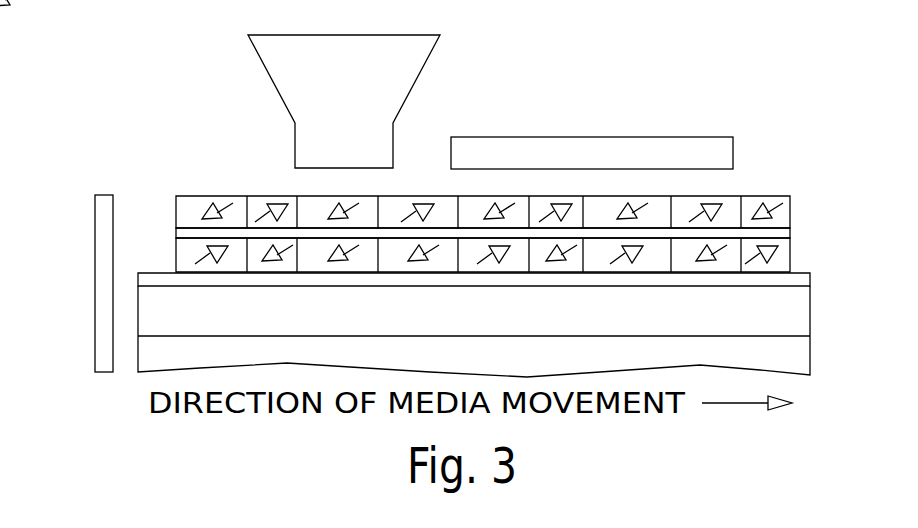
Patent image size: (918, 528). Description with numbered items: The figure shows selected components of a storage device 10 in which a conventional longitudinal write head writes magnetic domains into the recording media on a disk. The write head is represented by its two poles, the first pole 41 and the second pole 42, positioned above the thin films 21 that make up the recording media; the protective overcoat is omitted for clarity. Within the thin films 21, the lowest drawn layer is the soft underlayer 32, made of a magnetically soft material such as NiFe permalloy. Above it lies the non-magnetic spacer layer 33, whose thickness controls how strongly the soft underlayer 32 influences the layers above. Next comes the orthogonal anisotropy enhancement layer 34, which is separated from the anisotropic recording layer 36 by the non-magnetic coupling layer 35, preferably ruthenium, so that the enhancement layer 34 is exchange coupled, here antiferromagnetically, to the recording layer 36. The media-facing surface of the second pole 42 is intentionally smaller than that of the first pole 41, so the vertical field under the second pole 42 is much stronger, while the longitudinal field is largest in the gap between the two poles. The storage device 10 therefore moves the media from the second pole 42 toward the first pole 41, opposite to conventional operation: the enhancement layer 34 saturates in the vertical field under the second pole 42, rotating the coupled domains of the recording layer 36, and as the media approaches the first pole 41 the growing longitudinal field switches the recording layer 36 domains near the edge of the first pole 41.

The storage device 10 is at (732, 70).
The thin films 21 is at (95, 283).
The soft underlayer 32 is at (793, 310).
The non-magnetic spacer layer 33 is at (153, 276).
The orthogonal anisotropy enhancement layer 34 is at (787, 257).
The non-magnetic coupling layer 35 is at (787, 235).
The anisotropic recording layer 36 is at (783, 213).
The P1 pole 41 is at (623, 148).
The P2 pole 42 is at (383, 102).